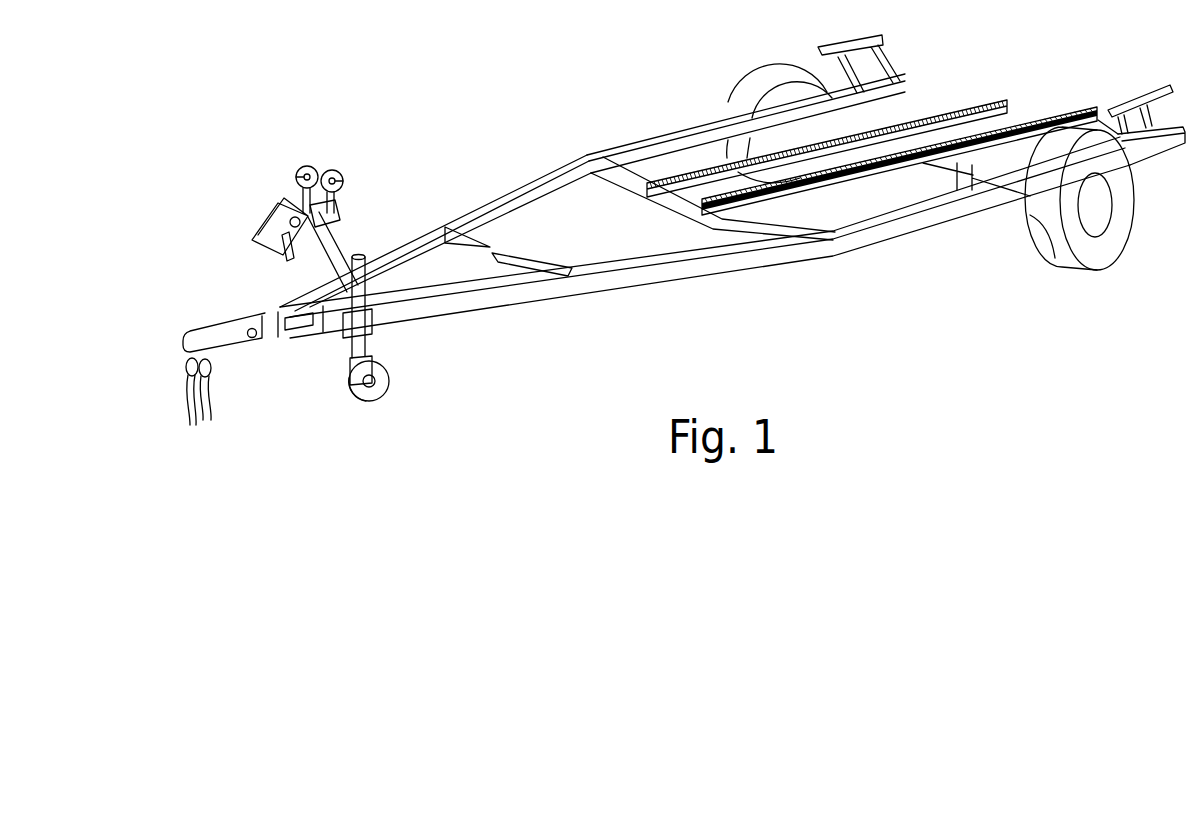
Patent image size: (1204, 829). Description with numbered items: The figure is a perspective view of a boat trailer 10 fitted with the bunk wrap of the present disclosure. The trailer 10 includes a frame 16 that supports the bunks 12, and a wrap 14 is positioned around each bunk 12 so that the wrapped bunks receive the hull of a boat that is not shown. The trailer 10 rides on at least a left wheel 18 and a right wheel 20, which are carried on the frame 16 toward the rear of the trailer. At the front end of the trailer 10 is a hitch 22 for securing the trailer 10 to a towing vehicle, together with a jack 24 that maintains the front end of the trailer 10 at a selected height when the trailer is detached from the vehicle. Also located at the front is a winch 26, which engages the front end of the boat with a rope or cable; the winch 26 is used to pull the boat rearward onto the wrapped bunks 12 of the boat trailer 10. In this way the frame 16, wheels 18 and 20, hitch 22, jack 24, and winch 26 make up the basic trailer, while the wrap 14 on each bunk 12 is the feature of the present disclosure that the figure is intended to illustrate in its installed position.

The boat trailer 10 is at (765, 320).
The bunk 12 is at (998, 107).
The wrap 14 is at (697, 176).
The frame 16 is at (600, 153).
The left wheel 18 is at (1089, 270).
The right wheel 20 is at (727, 115).
The hitch 22 is at (210, 403).
The jack 24 is at (385, 350).
The winch 26 is at (280, 200).